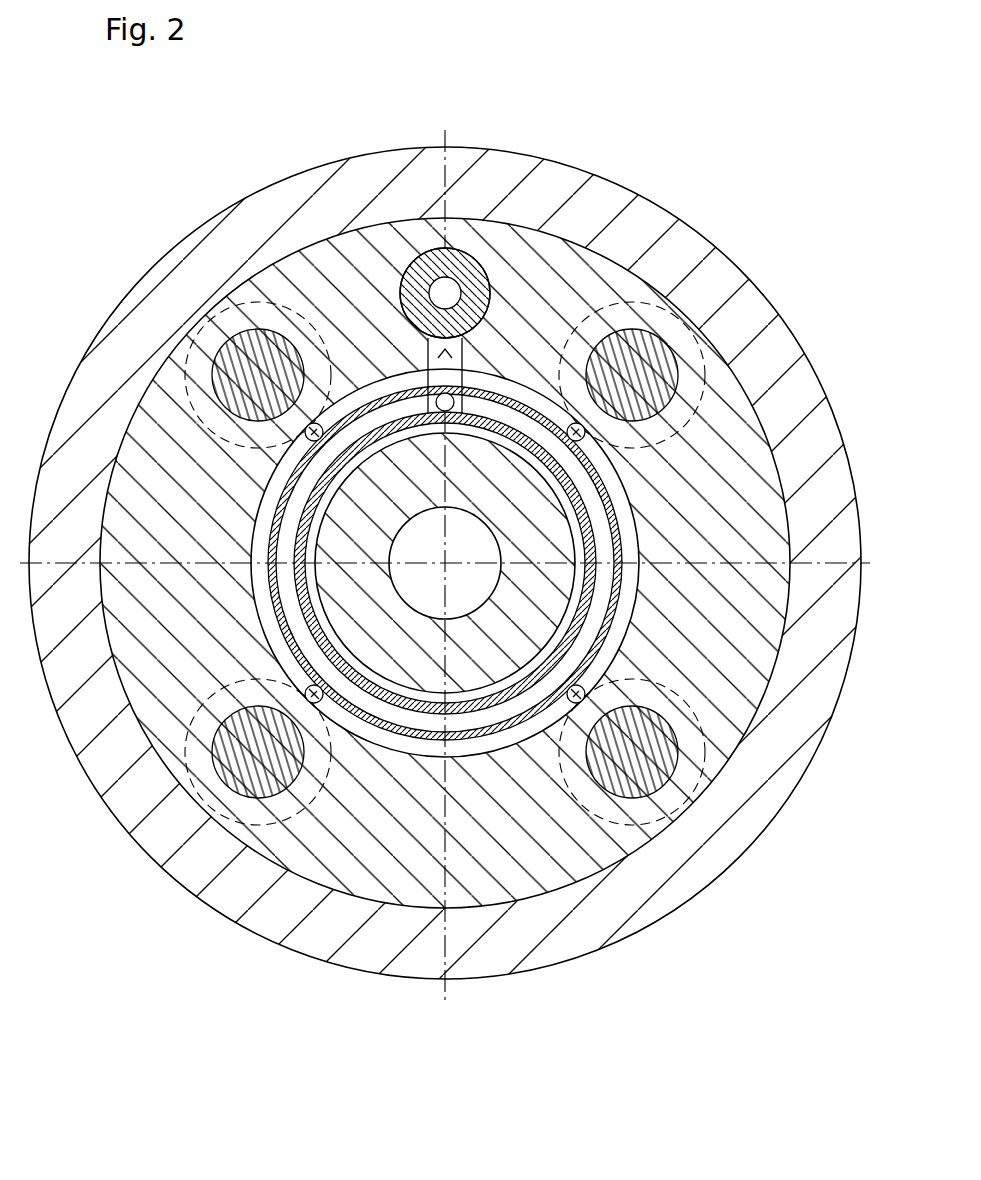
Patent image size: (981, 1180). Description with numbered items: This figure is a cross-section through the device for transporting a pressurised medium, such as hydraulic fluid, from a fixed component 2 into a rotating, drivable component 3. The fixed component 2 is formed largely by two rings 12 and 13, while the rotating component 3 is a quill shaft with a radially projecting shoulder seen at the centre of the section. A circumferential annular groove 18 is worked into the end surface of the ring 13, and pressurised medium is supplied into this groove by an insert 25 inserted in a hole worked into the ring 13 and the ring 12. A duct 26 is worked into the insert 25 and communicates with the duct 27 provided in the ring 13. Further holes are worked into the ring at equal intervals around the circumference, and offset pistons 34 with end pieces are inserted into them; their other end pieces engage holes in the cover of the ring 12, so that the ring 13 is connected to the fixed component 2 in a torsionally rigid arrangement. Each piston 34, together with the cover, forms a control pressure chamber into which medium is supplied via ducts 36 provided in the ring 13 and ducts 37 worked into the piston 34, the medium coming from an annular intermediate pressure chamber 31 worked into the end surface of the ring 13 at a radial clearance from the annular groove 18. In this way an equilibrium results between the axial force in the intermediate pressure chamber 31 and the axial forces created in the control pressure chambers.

The fixed component 2 is at (162, 236).
The rotating component 3 is at (423, 604).
The ring 12 is at (480, 178).
The ring 13 is at (521, 260).
The annular groove 18 is at (285, 500).
The insert 25 is at (413, 272).
The duct 26 is at (440, 282).
The duct 27 is at (560, 413).
The intermediate pressure chamber 31 is at (625, 510).
The piston 34 is at (666, 771).
The duct 36 is at (600, 688).
The duct 37 is at (652, 792).